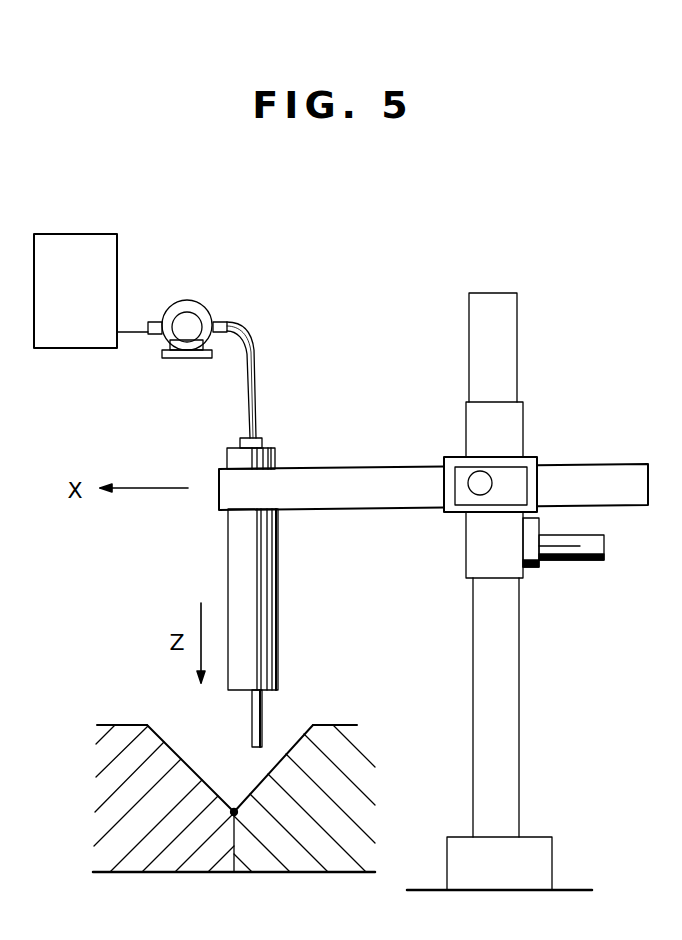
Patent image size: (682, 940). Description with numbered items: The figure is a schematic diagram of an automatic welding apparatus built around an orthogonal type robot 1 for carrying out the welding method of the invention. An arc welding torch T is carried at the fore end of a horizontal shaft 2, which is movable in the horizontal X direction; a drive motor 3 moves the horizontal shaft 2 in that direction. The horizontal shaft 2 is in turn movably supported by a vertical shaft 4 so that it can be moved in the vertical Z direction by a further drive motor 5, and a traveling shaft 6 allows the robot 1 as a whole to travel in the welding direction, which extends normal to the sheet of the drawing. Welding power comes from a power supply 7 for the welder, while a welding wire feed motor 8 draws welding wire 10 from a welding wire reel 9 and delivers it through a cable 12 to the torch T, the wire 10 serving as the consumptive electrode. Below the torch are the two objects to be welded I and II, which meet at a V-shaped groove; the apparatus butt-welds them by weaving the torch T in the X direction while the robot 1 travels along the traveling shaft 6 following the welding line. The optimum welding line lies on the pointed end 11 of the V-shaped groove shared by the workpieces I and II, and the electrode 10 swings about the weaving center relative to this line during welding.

The robot 1 is at (547, 417).
The horizontal shaft 2 is at (360, 468).
The drive motor 3 is at (474, 488).
The vertical shaft 4 is at (503, 667).
The drive motor 5 is at (604, 556).
The traveling shaft 6 is at (462, 853).
The power supply 7 is at (97, 245).
The welding wire feed motor 8 is at (177, 326).
The welding wire reel 9 is at (193, 300).
The welding wire 10 is at (252, 718).
The pointed end 11 is at (236, 814).
The cable 12 is at (268, 380).
The arc welding torch T is at (257, 632).
The object to be welded I is at (304, 798).
The object to be welded II is at (164, 798).